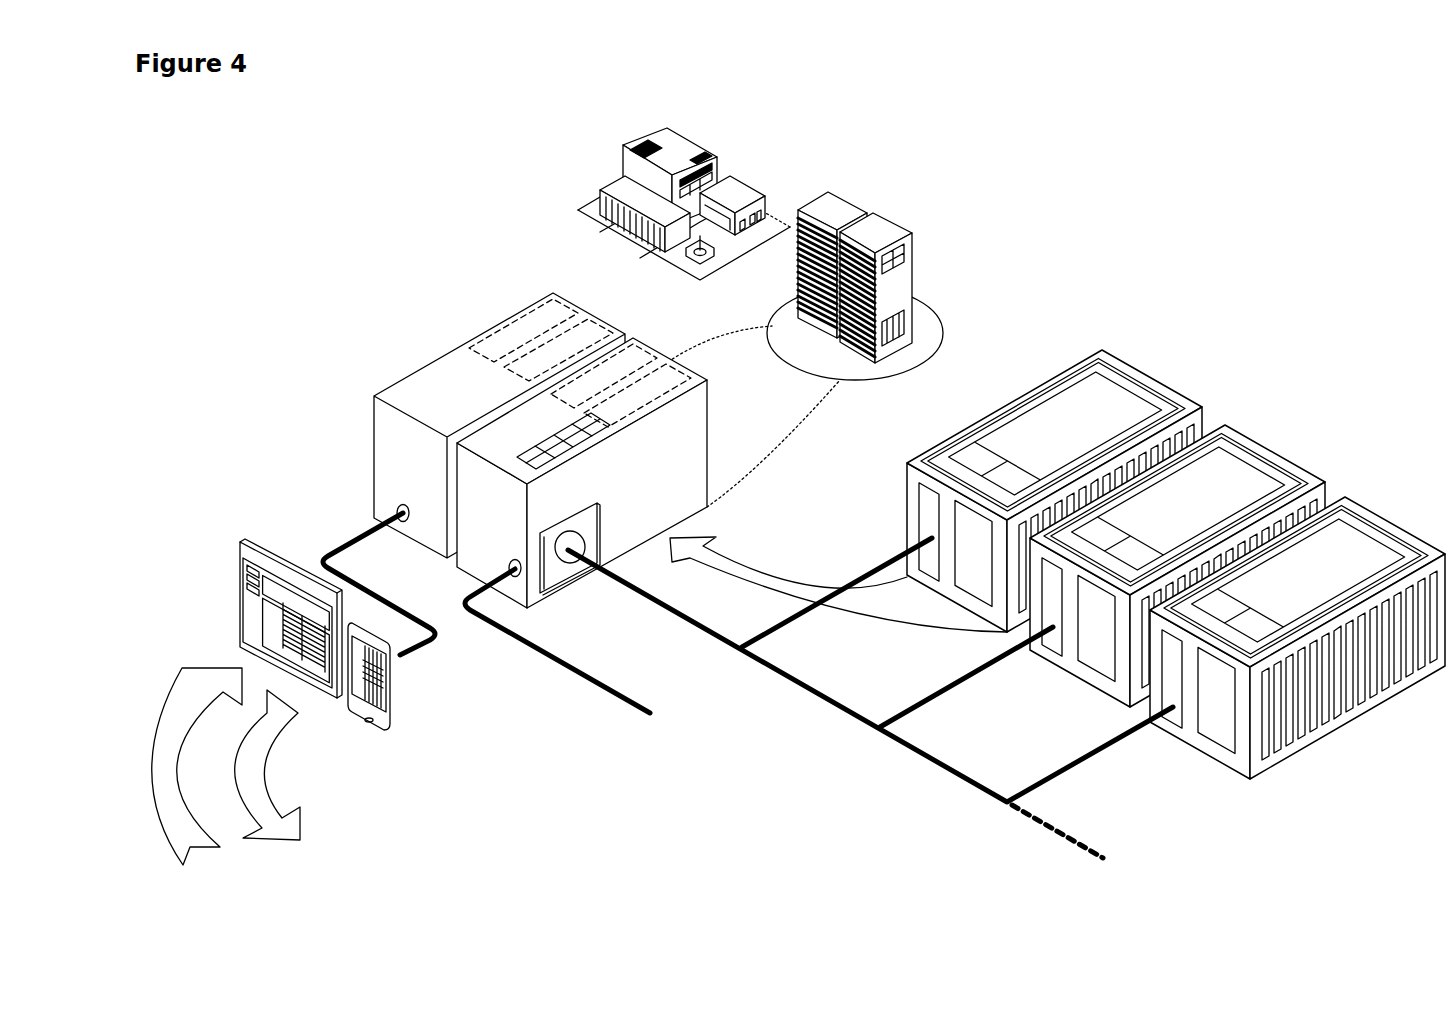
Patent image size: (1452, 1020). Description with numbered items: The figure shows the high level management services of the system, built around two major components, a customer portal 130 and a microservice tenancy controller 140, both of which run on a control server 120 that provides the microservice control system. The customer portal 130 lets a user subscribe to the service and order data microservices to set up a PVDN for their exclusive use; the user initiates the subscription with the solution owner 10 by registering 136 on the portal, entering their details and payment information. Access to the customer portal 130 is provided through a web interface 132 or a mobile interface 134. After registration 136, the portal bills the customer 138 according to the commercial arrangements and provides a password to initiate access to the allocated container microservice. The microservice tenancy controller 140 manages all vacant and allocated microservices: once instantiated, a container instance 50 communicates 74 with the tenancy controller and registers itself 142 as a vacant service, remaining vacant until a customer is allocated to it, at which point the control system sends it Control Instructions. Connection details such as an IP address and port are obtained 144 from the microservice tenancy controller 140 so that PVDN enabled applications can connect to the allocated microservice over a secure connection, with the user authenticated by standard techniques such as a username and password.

The solution owner 10 is at (652, 132).
The control server 120 is at (837, 208).
The customer portal 130 is at (422, 392).
The microservice tenancy controller 140 is at (627, 373).
The container instance 50 is at (1143, 378).
The registering as a vacant service 142 is at (730, 577).
The communication 74 is at (777, 628).
The obtaining connection details 144 is at (632, 707).
The web interface 132 is at (252, 542).
The mobile interface 134 is at (377, 695).
The registering 136 is at (185, 722).
The billing the customer 138 is at (245, 760).